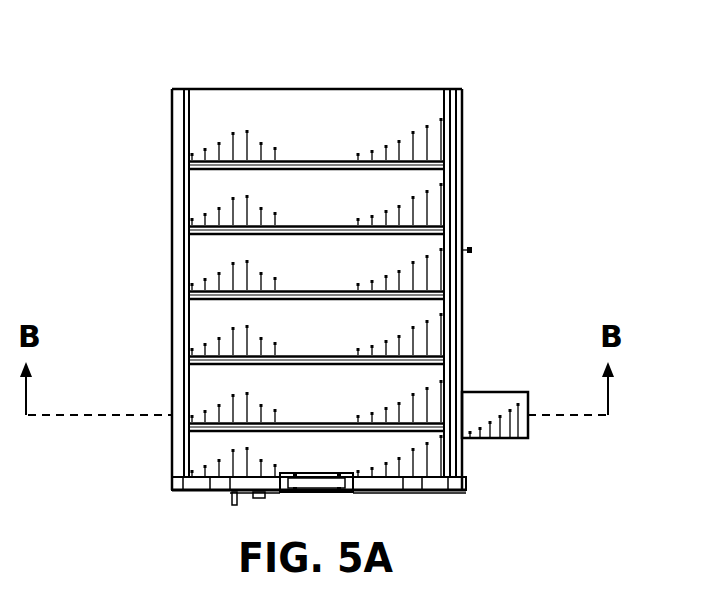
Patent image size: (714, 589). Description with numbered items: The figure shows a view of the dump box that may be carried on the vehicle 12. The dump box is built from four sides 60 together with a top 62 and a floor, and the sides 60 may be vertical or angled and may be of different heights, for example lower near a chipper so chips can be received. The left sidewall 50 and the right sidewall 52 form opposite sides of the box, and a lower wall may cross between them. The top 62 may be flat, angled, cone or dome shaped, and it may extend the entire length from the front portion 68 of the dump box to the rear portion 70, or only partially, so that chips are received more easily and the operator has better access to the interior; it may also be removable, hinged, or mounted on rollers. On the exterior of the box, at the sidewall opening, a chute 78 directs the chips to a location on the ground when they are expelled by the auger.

The vehicle 12 is at (167, 58).
The front portion 68 is at (272, 57).
The top 62 is at (386, 105).
The left sidewall 50 is at (172, 153).
The sides 60 is at (150, 232).
The right sidewall 52 is at (462, 138).
The chute 78 is at (497, 403).
The rear portion 70 is at (190, 497).